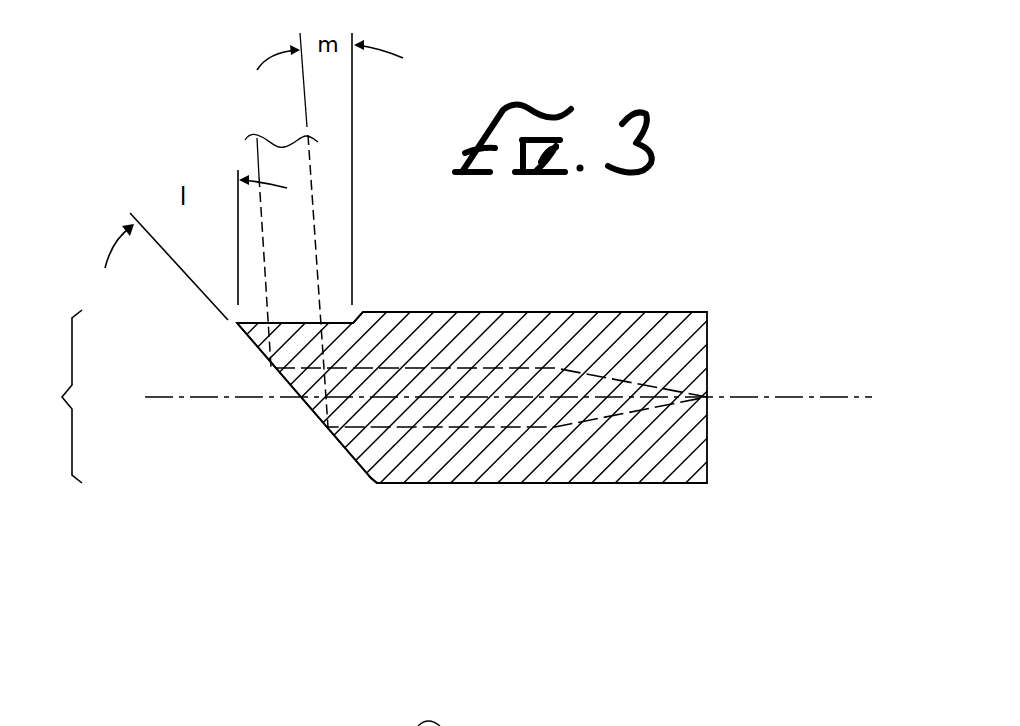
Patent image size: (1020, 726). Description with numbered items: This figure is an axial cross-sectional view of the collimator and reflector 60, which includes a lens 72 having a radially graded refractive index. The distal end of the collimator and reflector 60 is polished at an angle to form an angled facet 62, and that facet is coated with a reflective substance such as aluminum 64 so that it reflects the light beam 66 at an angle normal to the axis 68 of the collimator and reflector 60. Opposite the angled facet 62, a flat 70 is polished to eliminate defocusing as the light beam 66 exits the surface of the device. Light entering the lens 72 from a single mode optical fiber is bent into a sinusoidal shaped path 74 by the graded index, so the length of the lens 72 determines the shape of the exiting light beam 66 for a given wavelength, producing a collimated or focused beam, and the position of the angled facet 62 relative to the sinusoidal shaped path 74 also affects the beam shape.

The collimator and reflector 60 is at (53, 396).
The angled facet 62 is at (365, 471).
The aluminum 64 is at (337, 440).
The light beam 66 is at (255, 153).
The axis 68 is at (768, 397).
The flat 70 is at (334, 322).
The lens 72 is at (458, 333).
The sinusoidal shaped path 74 is at (583, 363).